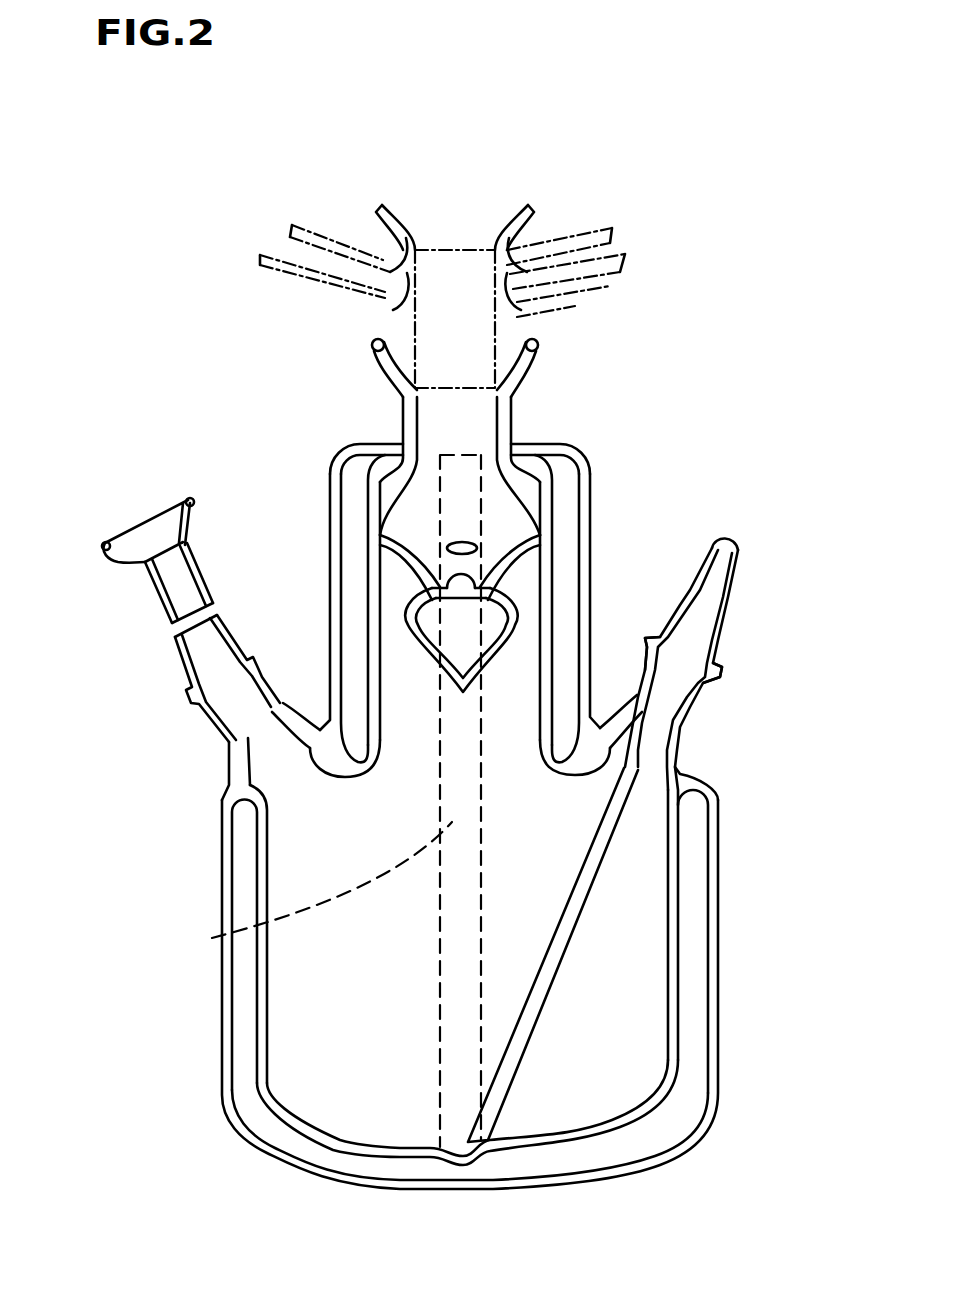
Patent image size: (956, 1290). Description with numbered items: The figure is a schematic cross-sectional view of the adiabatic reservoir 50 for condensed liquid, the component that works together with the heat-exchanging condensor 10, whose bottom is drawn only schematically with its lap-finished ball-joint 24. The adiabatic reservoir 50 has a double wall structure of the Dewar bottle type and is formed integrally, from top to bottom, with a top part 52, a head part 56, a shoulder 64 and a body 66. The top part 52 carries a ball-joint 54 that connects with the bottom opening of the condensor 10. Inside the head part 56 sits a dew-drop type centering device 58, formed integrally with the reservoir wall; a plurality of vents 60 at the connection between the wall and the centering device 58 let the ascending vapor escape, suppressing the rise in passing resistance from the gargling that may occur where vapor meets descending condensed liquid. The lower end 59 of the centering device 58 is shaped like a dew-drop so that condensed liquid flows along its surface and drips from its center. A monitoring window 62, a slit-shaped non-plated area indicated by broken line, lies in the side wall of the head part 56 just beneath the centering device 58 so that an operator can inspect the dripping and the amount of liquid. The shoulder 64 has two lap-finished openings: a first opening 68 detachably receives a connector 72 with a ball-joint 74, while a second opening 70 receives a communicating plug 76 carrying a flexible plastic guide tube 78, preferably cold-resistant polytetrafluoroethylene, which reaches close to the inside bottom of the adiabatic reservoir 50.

The heat-exchanging condensor 10 is at (287, 240).
The ball-joint 24 is at (460, 271).
The adiabatic reservoir for condensed liquid 50 is at (345, 450).
The top part 52 is at (372, 345).
The ball-joint 54 is at (540, 356).
The head part 56 is at (566, 452).
The dew-drop type centering device 58 is at (432, 522).
The lower end 59 is at (440, 672).
The vents for escaping vapor 60 is at (445, 583).
The monitoring window 62 is at (214, 939).
The shoulder 64 is at (597, 712).
The body 66 is at (718, 940).
The first lap-finished opening 68 is at (212, 724).
The second lap-finished opening 70 is at (712, 659).
The connector 72 is at (190, 588).
The ball-joint 74 is at (190, 500).
The communicating plug 76 is at (673, 617).
The flexible guide tube 78 is at (617, 833).